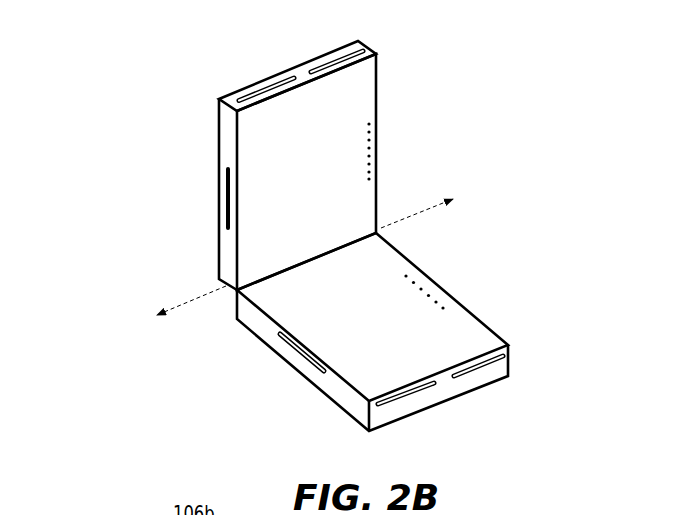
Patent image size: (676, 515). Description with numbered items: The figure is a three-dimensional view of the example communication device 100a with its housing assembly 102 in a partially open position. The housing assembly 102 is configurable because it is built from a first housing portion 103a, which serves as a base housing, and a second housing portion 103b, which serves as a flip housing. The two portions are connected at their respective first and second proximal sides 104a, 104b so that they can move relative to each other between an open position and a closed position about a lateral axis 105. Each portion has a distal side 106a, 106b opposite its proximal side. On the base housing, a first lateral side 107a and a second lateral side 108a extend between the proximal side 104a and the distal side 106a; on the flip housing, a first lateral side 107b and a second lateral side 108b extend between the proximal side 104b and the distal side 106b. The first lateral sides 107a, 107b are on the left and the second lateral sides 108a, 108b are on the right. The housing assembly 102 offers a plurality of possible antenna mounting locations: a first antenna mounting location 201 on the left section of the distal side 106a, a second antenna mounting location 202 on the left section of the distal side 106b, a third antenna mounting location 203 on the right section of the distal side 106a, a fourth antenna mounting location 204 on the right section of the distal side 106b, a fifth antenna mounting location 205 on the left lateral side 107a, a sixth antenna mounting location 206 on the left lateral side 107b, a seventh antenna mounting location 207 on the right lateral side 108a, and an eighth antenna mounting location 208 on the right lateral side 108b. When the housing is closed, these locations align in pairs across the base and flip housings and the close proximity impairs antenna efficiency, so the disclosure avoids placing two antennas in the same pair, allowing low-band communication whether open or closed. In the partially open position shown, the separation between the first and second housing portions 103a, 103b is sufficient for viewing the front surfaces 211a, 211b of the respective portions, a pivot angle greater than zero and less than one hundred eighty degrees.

The communication device 100a is at (71, 148).
The housing assembly 102 is at (252, 335).
The first housing portion 103a is at (457, 330).
The second housing portion 103b is at (337, 150).
The first proximal side 104a is at (236, 292).
The second proximal side 104b is at (228, 288).
The lateral axis 105 is at (430, 206).
The distal side 106a is at (445, 390).
The distal side 106b is at (302, 74).
The first lateral side 107a is at (348, 396).
The first lateral side 107b is at (226, 136).
The second lateral side 108a is at (510, 352).
The second lateral side 108b is at (378, 140).
The first antenna mounting location 201 is at (406, 394).
The second antenna mounting location 202 is at (220, 94).
The third antenna mounting location 203 is at (487, 386).
The fourth antenna mounting location 204 is at (374, 68).
The fifth antenna mounting location 205 is at (294, 348).
The sixth antenna mounting location 206 is at (226, 188).
The seventh antenna mounting location 207 is at (448, 282).
The eighth antenna mounting location 208 is at (378, 165).
The front surface 211a is at (372, 317).
The front surface 211b is at (306, 172).